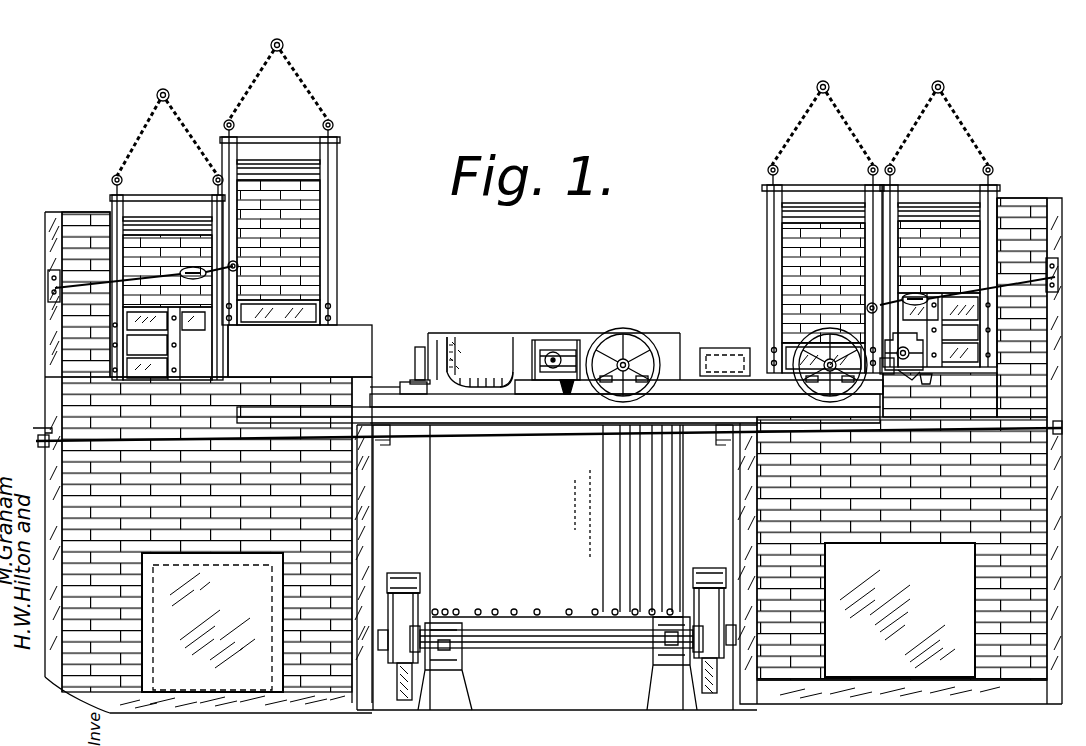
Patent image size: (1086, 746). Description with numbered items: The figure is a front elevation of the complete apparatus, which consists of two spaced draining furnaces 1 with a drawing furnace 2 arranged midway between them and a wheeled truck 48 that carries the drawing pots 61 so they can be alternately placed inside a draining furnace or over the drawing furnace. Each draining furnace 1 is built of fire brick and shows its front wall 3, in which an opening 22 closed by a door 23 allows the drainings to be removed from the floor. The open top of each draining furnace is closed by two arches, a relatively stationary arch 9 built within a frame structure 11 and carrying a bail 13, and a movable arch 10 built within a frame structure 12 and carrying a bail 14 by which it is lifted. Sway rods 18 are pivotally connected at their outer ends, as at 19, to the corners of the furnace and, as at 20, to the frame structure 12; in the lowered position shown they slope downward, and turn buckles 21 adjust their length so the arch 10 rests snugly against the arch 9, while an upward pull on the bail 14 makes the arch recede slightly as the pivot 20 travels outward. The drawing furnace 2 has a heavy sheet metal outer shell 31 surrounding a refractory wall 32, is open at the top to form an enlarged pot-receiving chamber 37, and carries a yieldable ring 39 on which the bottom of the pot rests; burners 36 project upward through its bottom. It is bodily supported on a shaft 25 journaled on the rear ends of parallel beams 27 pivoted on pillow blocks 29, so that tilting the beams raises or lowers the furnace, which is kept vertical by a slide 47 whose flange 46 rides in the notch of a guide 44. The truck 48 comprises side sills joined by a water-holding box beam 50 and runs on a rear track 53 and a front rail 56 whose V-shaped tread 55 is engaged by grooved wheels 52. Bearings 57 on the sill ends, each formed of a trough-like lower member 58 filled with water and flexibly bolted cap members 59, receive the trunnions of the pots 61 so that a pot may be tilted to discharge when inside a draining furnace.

The draining furnace 1 is at (350, 482).
The drawing furnace 2 is at (660, 455).
The front wall 3 is at (258, 394).
The arch 9 is at (145, 230).
The arch 10 is at (305, 209).
The frame structure 11 is at (120, 197).
The frame structure 12 is at (240, 152).
The bail 13 is at (160, 112).
The bail 14 is at (270, 70).
The sway rod 18 is at (85, 290).
The pivot 19 is at (52, 290).
The pivot 20 is at (236, 272).
The turn buckle 21 is at (195, 280).
The opening 22 is at (270, 690).
The door 23 is at (210, 670).
The shaft 25 is at (572, 635).
The beam 27 is at (412, 675).
The pillow block 29 is at (652, 682).
The outer shell 31 is at (557, 553).
The wall 32 is at (453, 345).
The burner 36 is at (908, 372).
The pot-receiving chamber 37 is at (490, 342).
The ring 39 is at (470, 373).
The guide 44 is at (406, 386).
The flange 46 is at (419, 347).
The slide 47 is at (433, 345).
The truck 48 is at (706, 346).
The box beam 50 is at (726, 355).
The wheel 52 is at (612, 341).
The track 53 is at (902, 344).
The tread 55 is at (560, 415).
The rail 56 is at (520, 408).
The bearing 57 is at (566, 346).
The lower member 58 is at (566, 386).
The cap member 59 is at (556, 349).
The drawing pot 61 is at (518, 343).